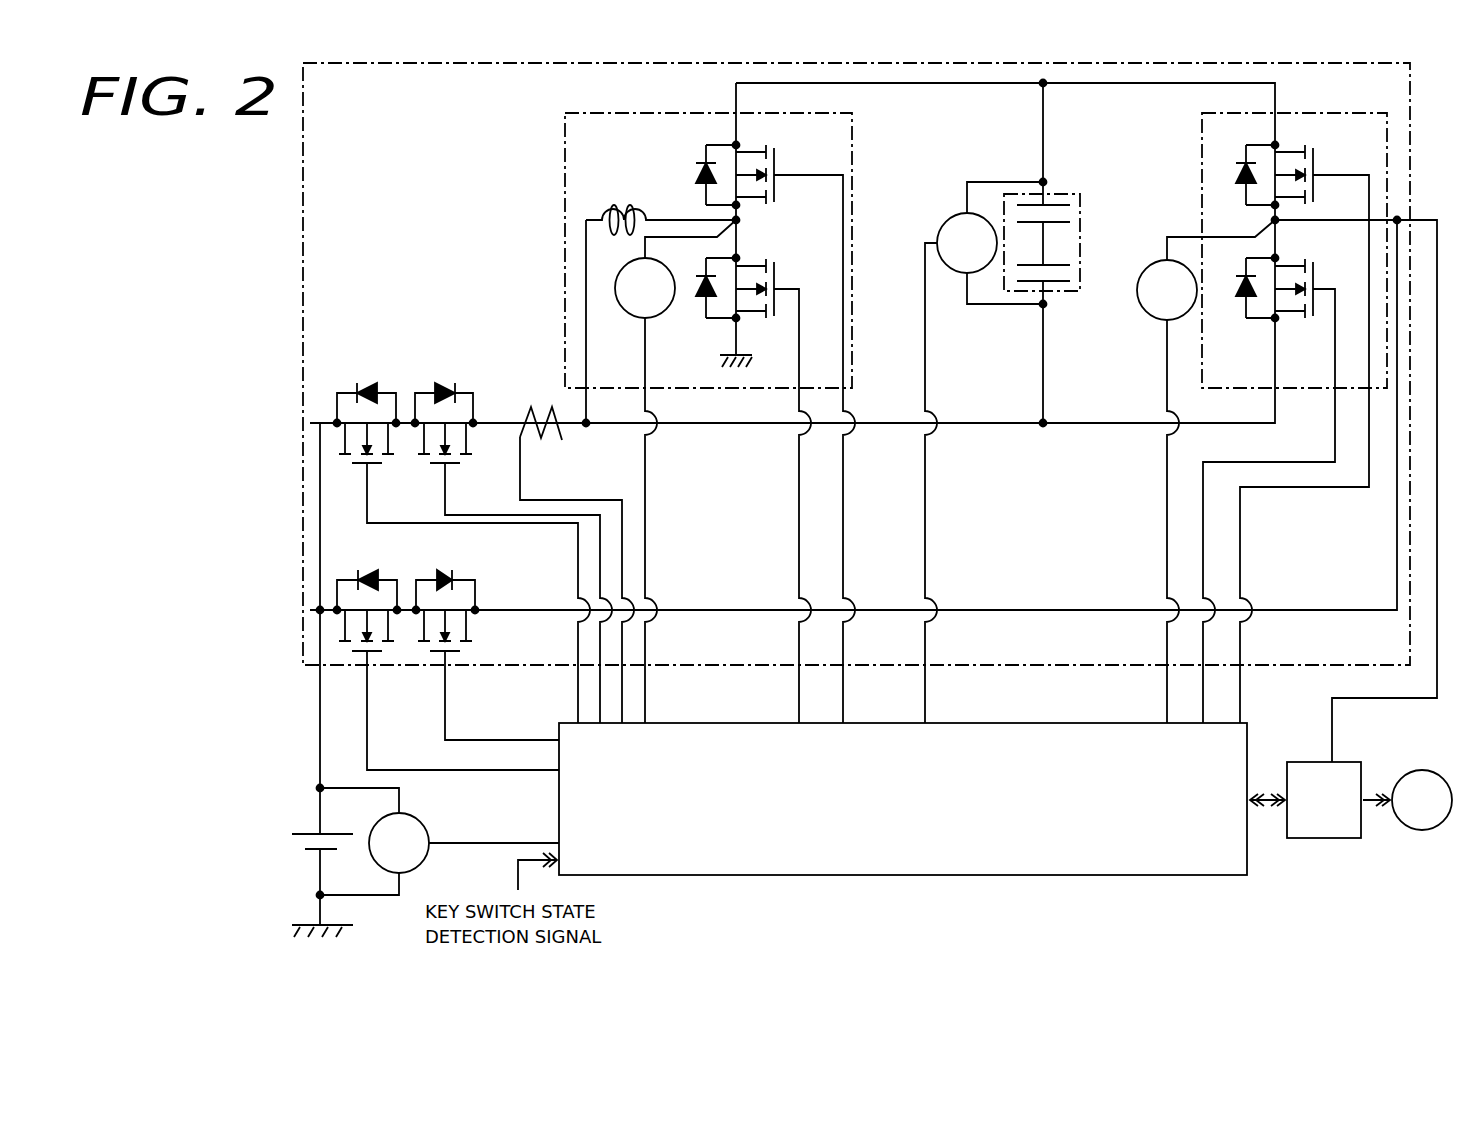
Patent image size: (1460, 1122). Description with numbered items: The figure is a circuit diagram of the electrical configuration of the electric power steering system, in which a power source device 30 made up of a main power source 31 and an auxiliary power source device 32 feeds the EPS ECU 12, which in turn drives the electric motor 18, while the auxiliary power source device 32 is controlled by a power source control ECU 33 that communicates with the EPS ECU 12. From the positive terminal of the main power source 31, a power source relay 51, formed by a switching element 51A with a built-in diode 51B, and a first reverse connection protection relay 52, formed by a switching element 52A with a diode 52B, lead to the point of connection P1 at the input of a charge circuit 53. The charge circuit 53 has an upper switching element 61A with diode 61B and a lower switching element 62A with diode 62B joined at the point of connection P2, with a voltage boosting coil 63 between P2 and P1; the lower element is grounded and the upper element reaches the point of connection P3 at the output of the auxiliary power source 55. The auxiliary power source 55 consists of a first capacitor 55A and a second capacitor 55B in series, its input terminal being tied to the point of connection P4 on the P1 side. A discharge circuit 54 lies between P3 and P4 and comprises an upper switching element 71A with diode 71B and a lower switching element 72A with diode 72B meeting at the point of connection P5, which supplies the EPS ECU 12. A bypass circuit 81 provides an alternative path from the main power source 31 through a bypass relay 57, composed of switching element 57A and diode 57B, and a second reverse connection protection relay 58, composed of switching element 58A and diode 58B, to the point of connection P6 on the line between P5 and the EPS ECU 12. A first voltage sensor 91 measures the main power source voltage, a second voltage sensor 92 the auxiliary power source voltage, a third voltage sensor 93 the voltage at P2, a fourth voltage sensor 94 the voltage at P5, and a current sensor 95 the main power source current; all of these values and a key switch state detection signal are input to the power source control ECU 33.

The EPS ECU 12 is at (1335, 840).
The electric motor 18 is at (1424, 770).
The power source device 30 is at (280, 705).
The main power source 31 is at (302, 832).
The auxiliary power source device 32 is at (303, 637).
The power source control ECU 33 is at (910, 877).
The power source relay 51 is at (325, 420).
The switching element 51A is at (375, 464).
The diode 51B is at (372, 388).
The first reverse connection protection relay 52 is at (478, 383).
The switching element 52A is at (453, 464).
The diode 52B is at (445, 385).
The charge circuit 53 is at (565, 150).
The discharge circuit 54 is at (1202, 200).
The auxiliary power source 55 is at (1082, 252).
The first capacitor 55A is at (1060, 288).
The second capacitor 55B is at (1048, 205).
The bypass relay 57 is at (330, 572).
The switching element 57A is at (372, 652).
The diode 57B is at (372, 580).
The second reverse connection protection relay 58 is at (478, 568).
The switching element 58A is at (450, 652).
The diode 58B is at (446, 578).
The upper switching element 61A is at (778, 168).
The diode 61B is at (700, 178).
The lower switching element 62A is at (778, 281).
The diode 62B is at (700, 300).
The voltage boosting coil 63 is at (624, 203).
The upper switching element 71A is at (1316, 168).
The diode 71B is at (1240, 178).
The lower switching element 72A is at (1316, 281).
The diode 72B is at (1244, 302).
The bypass circuit 81 is at (1025, 604).
The first voltage sensor 91 is at (430, 827).
The second voltage sensor 92 is at (948, 225).
The third voltage sensor 93 is at (626, 308).
The fourth voltage sensor 94 is at (1142, 318).
The current sensor 95 is at (532, 405).
The point of connection P1 is at (588, 427).
The point of connection P2 is at (740, 220).
The point of connection P3 is at (1047, 86).
The point of connection P4 is at (1043, 427).
The point of connection P5 is at (1279, 220).
The point of connection P6 is at (1400, 216).